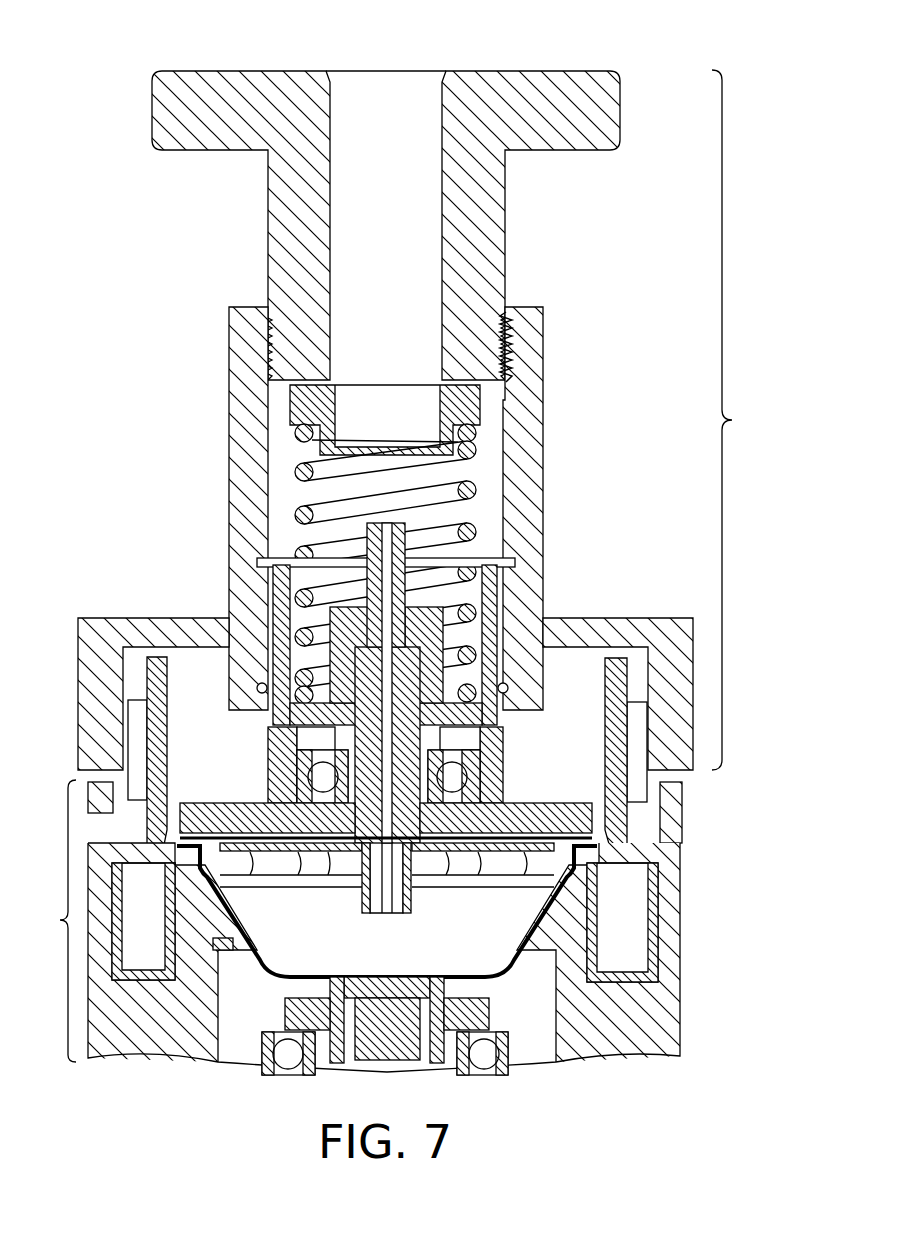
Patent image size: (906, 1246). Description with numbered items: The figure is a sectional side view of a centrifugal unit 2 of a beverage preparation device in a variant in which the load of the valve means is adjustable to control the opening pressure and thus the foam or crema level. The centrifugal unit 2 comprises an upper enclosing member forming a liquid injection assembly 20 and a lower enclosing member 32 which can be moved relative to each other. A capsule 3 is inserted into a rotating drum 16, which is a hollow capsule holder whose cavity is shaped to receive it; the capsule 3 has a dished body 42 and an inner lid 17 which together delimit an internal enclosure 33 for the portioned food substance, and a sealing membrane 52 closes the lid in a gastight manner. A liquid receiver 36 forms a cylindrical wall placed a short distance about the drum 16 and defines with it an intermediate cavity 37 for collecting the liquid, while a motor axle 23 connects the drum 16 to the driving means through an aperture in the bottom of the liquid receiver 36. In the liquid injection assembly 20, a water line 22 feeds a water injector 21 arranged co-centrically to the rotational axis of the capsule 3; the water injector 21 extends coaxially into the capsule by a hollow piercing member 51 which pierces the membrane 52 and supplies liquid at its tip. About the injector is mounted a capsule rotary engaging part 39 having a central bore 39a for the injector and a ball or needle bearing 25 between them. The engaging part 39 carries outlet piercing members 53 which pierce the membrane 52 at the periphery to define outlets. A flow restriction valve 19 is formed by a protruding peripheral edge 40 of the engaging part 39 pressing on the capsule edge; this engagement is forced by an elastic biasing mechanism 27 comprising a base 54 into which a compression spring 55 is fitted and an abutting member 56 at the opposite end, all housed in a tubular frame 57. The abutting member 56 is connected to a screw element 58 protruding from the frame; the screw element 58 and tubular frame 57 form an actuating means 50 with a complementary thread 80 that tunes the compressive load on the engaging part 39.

The centrifugal unit 2 is at (712, 810).
The capsule 3 is at (522, 936).
The rotating drum 16 is at (510, 968).
The lid 17 is at (306, 862).
The flow restriction valve 19 is at (118, 595).
The liquid injection assembly 20 is at (737, 420).
The water injector 21 is at (482, 748).
The water line 22 is at (455, 665).
The motor axle 23 is at (390, 1048).
The ball or needle bearing 25 is at (320, 778).
The elastic biasing mechanism 27 is at (214, 530).
The lower enclosing member 32 is at (53, 921).
The internal enclosure 33 is at (330, 985).
The liquid receiver 36 is at (672, 930).
The intermediate cavity 37 is at (628, 955).
The capsule rotary engaging part 39 is at (572, 810).
The central bore 39a is at (298, 735).
The protruding peripheral edge 40 is at (166, 850).
The body 42 is at (258, 950).
The actuating means 50 is at (386, 190).
The hollow piercing member 51 is at (412, 903).
The sealing membrane 52 is at (266, 840).
The outlet piercing members 53 is at (530, 846).
The base 54 is at (276, 590).
The compression spring 55 is at (298, 462).
The abutting member 56 is at (300, 418).
The tubular frame 57 is at (242, 346).
The screw element 58 is at (278, 202).
The complementary thread assembly 80 is at (508, 346).